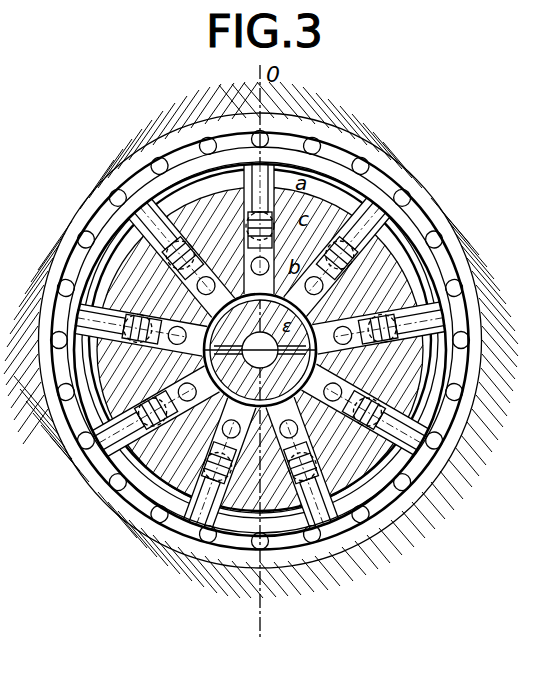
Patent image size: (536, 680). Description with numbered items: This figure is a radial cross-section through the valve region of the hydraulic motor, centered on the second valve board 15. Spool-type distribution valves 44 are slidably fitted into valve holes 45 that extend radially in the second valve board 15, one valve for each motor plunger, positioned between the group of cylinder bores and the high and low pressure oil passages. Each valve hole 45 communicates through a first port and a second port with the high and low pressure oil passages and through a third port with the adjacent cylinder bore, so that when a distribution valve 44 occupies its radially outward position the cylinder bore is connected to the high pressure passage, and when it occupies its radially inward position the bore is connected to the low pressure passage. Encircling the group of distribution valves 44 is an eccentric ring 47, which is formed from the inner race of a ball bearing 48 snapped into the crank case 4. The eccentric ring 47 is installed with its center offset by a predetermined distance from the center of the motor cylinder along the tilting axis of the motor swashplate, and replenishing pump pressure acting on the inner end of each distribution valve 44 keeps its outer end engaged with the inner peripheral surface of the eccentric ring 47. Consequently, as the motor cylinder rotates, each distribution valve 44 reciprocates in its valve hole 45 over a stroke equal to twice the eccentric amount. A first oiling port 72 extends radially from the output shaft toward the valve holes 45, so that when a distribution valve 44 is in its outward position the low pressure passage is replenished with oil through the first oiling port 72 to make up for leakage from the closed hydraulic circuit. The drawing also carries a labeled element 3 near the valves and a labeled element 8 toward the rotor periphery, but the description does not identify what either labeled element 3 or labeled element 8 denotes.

The piston roller 3 is at (260, 348).
The crank case 4 is at (370, 140).
The rotor 8 is at (335, 368).
The second valve board 15 is at (397, 277).
The distribution valve 44 is at (148, 212).
The valve hole 45 is at (145, 230).
The eccentric ring 47 is at (413, 240).
The ball bearing 48 is at (413, 197).
The first oiling port 72 is at (260, 350).